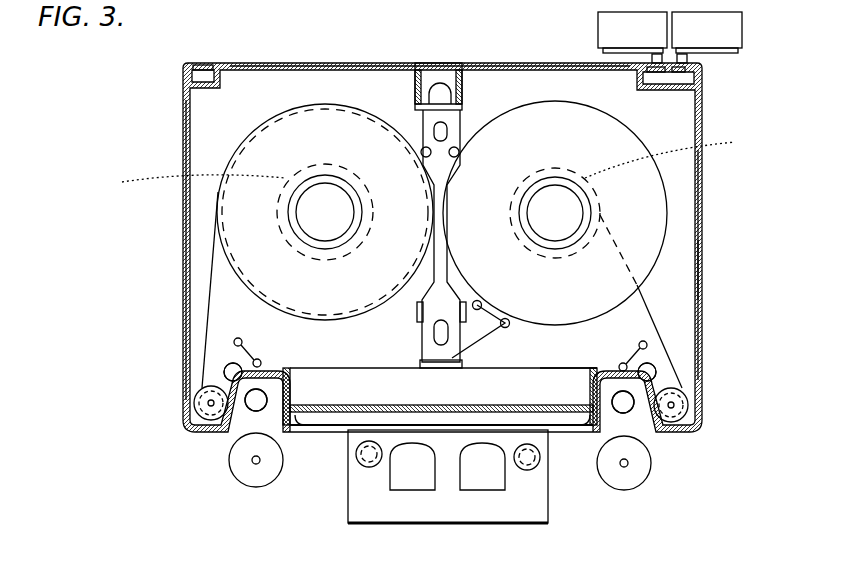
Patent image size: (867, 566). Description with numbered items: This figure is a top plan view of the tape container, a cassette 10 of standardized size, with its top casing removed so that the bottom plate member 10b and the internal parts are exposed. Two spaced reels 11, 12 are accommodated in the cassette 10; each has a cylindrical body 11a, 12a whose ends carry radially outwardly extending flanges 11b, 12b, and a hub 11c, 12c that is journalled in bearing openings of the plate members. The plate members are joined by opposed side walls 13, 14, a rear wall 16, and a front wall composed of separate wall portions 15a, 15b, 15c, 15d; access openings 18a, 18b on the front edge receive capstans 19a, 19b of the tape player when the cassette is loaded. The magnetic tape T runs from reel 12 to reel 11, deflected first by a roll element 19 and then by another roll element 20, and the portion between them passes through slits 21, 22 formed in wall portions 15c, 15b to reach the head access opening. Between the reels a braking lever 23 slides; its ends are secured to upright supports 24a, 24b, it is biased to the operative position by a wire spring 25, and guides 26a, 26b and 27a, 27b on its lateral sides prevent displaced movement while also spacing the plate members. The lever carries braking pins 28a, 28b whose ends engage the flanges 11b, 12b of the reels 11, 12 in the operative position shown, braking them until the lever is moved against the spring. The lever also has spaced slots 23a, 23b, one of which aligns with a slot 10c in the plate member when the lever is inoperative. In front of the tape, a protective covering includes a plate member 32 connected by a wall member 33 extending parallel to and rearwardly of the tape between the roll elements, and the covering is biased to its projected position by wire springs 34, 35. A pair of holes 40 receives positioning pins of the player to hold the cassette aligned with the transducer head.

The cassette 10 is at (678, 125).
The bottom plate member 10b is at (673, 305).
The slot 10c is at (437, 84).
The reel 11 is at (613, 213).
The cylindrical body 11a is at (684, 152).
The flanges 11b is at (588, 100).
The hub 11c is at (590, 202).
The reel 12 is at (255, 163).
The cylindrical body 12a is at (235, 205).
The flanges 12b is at (300, 106).
The hub 12c is at (318, 178).
The side wall 13 is at (700, 264).
The side wall 14 is at (183, 125).
The front wall portion 15a is at (665, 430).
The front wall portion 15b is at (624, 490).
The front wall portion 15c is at (268, 488).
The front wall portion 15d is at (228, 432).
The rear wall 16 is at (255, 63).
The access opening 18a is at (655, 438).
The access opening 18b is at (228, 382).
The roll element 19 is at (194, 412).
The capstan 19a is at (628, 414).
The capstan 19b is at (256, 412).
The roll element 20 is at (690, 412).
The slit 21 is at (296, 430).
The slit 22 is at (592, 428).
The braking lever 23 is at (439, 241).
The slot 23a is at (441, 130).
The slot 23b is at (433, 332).
The upright support 24a is at (420, 366).
The upright support 24b is at (471, 58).
The wire spring 25 is at (486, 322).
The guide 26a is at (417, 80).
The guide 26b is at (465, 78).
The guide 27a is at (417, 300).
The guide 27b is at (466, 300).
The braking pin 28a is at (459, 152).
The braking pin 28b is at (421, 152).
The plate member 32 is at (556, 388).
The wall member 33 is at (460, 398).
The wire spring 34 is at (234, 342).
The wire spring 35 is at (648, 346).
The holes 40 is at (224, 372).
The magnetic tape T is at (210, 282).